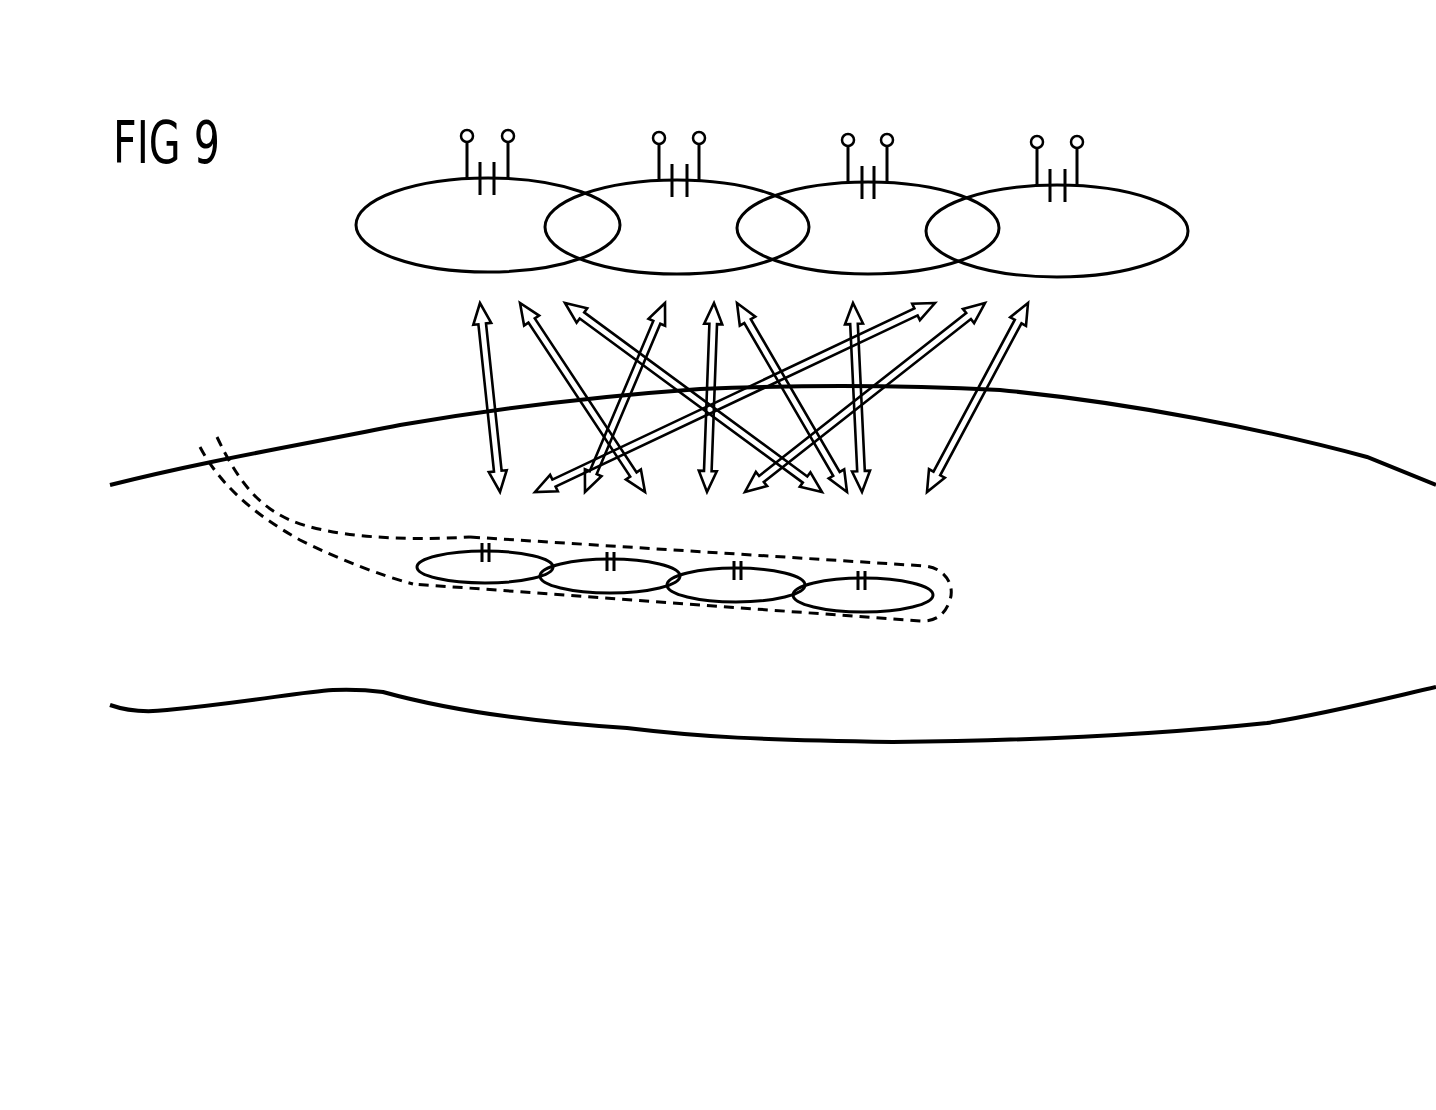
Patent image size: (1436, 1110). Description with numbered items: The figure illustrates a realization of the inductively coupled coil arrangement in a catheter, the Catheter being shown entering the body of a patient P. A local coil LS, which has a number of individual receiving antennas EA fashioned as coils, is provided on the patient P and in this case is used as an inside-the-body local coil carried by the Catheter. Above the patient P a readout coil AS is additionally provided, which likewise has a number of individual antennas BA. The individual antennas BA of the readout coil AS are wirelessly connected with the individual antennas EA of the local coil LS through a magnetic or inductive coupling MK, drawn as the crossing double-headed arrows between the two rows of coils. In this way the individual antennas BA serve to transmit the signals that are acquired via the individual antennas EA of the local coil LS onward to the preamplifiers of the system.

The individual antennas of the readout coil BA is at (772, 203).
The readout coil AS is at (844, 203).
The magnetic or inductive coupling MK is at (844, 394).
The individual receiving antennas EA is at (853, 662).
The local coil LS is at (682, 688).
The patient P is at (481, 714).
The catheter Catheter is at (284, 502).